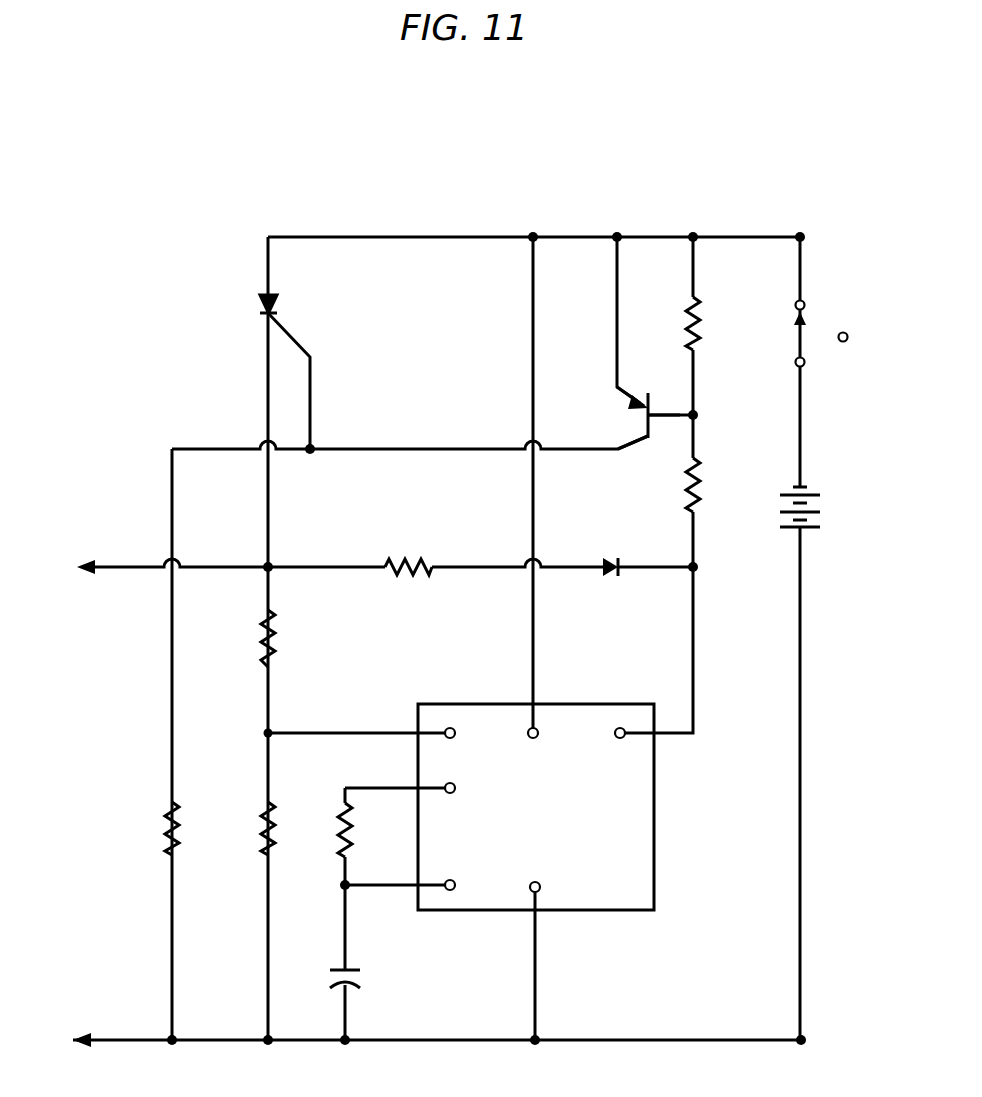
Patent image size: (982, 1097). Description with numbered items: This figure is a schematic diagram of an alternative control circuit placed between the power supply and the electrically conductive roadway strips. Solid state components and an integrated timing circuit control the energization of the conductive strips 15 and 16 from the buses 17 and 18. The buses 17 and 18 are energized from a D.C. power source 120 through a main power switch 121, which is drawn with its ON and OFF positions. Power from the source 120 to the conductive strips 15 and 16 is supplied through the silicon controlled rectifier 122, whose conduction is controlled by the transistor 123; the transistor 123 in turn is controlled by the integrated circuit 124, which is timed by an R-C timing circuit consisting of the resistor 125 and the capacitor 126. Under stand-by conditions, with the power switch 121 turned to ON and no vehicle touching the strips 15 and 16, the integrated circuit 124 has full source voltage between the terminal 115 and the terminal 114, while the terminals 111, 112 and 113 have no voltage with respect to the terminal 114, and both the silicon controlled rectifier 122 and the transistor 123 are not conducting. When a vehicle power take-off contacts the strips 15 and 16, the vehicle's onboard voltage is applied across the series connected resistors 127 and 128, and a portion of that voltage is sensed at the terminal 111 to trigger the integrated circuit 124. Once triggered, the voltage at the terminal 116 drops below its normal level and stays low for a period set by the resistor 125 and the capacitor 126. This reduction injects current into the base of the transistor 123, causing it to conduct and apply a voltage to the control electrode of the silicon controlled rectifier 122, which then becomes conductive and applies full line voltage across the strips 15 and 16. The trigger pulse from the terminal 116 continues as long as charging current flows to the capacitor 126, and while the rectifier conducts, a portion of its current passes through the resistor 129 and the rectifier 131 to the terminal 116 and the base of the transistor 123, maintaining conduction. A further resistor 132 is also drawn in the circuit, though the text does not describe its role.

The conductive strip 15 is at (55, 556).
The conductive strip 16 is at (56, 1033).
The bus 17 is at (800, 232).
The bus 18 is at (807, 1037).
The terminal 111 is at (455, 732).
The terminal 112 is at (455, 787).
The terminal 113 is at (455, 884).
The terminal 114 is at (540, 886).
The terminal 115 is at (538, 732).
The terminal 116 is at (621, 738).
The D.C. power source 120 is at (813, 490).
The main power switch 121 is at (828, 350).
The silicon controlled rectifier 122 is at (278, 308).
The transistor 123 is at (645, 416).
The integrated circuit 124 is at (672, 902).
The resistor 125 is at (341, 812).
The capacitor 126 is at (360, 972).
The resistor 127 is at (278, 634).
The resistor 128 is at (260, 812).
The resistor 129 is at (390, 562).
The rectifier 131 is at (613, 560).
The resistor 132 is at (163, 812).